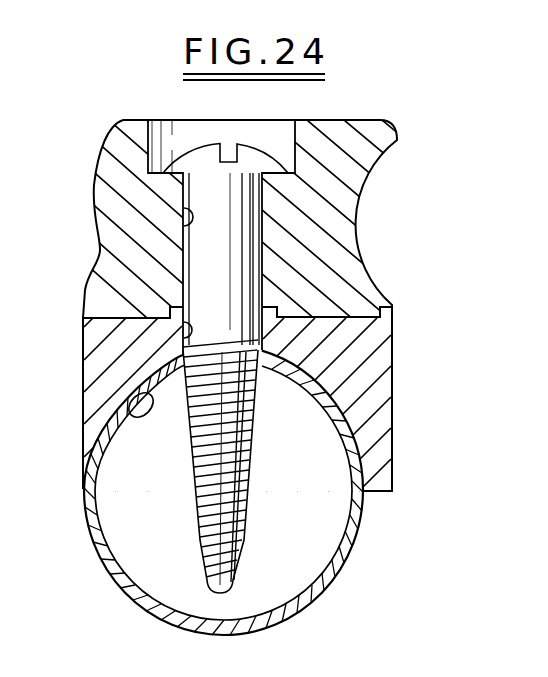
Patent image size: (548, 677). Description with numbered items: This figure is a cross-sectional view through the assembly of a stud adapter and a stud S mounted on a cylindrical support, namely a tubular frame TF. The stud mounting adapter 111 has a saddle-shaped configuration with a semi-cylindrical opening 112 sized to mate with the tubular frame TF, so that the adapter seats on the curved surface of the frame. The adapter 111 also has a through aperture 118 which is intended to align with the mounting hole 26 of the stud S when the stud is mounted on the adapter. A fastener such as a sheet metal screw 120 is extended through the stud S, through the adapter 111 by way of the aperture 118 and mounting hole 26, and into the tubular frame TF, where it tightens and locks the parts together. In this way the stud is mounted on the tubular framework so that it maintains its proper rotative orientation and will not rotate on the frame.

The support body S is at (134, 121).
The sheet metal screw 120 is at (266, 157).
The mounting hole 26 is at (183, 224).
The through aperture 118 is at (185, 350).
The semi-cylindrical opening 112 is at (110, 425).
The stud mounting adapter 111 is at (392, 368).
The tubular frame TF is at (102, 547).